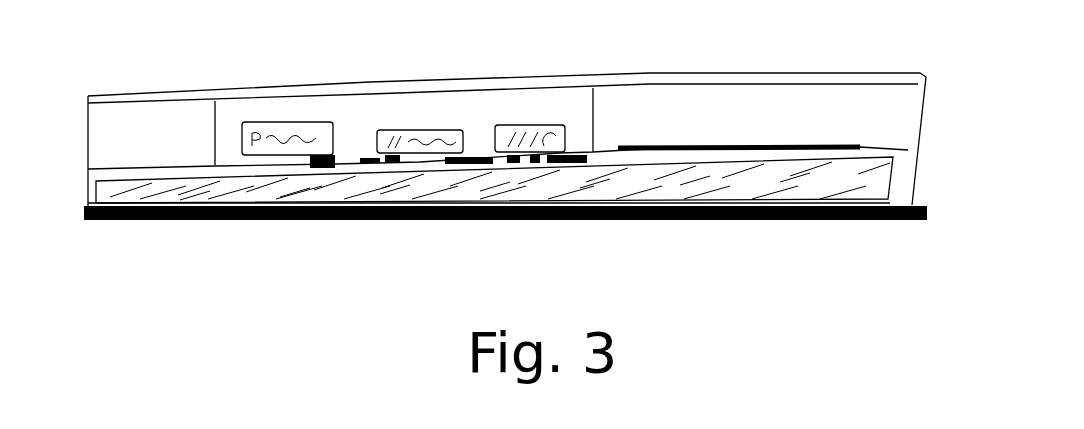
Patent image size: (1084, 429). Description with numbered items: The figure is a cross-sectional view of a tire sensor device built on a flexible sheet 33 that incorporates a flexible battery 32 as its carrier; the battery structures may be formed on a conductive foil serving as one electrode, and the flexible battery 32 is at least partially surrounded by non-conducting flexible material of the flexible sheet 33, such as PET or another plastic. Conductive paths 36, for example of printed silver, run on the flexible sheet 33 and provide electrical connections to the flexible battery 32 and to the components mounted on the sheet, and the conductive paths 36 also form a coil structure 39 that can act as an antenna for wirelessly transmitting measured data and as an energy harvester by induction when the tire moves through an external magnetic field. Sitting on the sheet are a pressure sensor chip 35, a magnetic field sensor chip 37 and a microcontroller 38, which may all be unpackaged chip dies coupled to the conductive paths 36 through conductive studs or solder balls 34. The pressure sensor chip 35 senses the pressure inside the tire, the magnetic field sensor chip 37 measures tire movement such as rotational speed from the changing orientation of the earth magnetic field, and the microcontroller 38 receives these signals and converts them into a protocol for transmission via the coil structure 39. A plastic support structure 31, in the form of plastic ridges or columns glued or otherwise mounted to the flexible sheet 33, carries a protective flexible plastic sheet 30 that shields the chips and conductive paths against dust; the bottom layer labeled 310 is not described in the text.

The protective flexible plastic sheet 30 is at (141, 92).
The plastic support structure 31 is at (88, 143).
The flexible battery 32 is at (127, 192).
The flexible sheet 33 is at (193, 205).
The conductive studs or solder balls 34 is at (262, 166).
The pressure sensor chip 35 is at (287, 123).
The conductive paths 36 is at (362, 165).
The magnetic field sensor chip 37 is at (407, 129).
The microcontroller 38 is at (517, 125).
The coil structure 39 is at (742, 141).
The base layer 310 is at (902, 217).